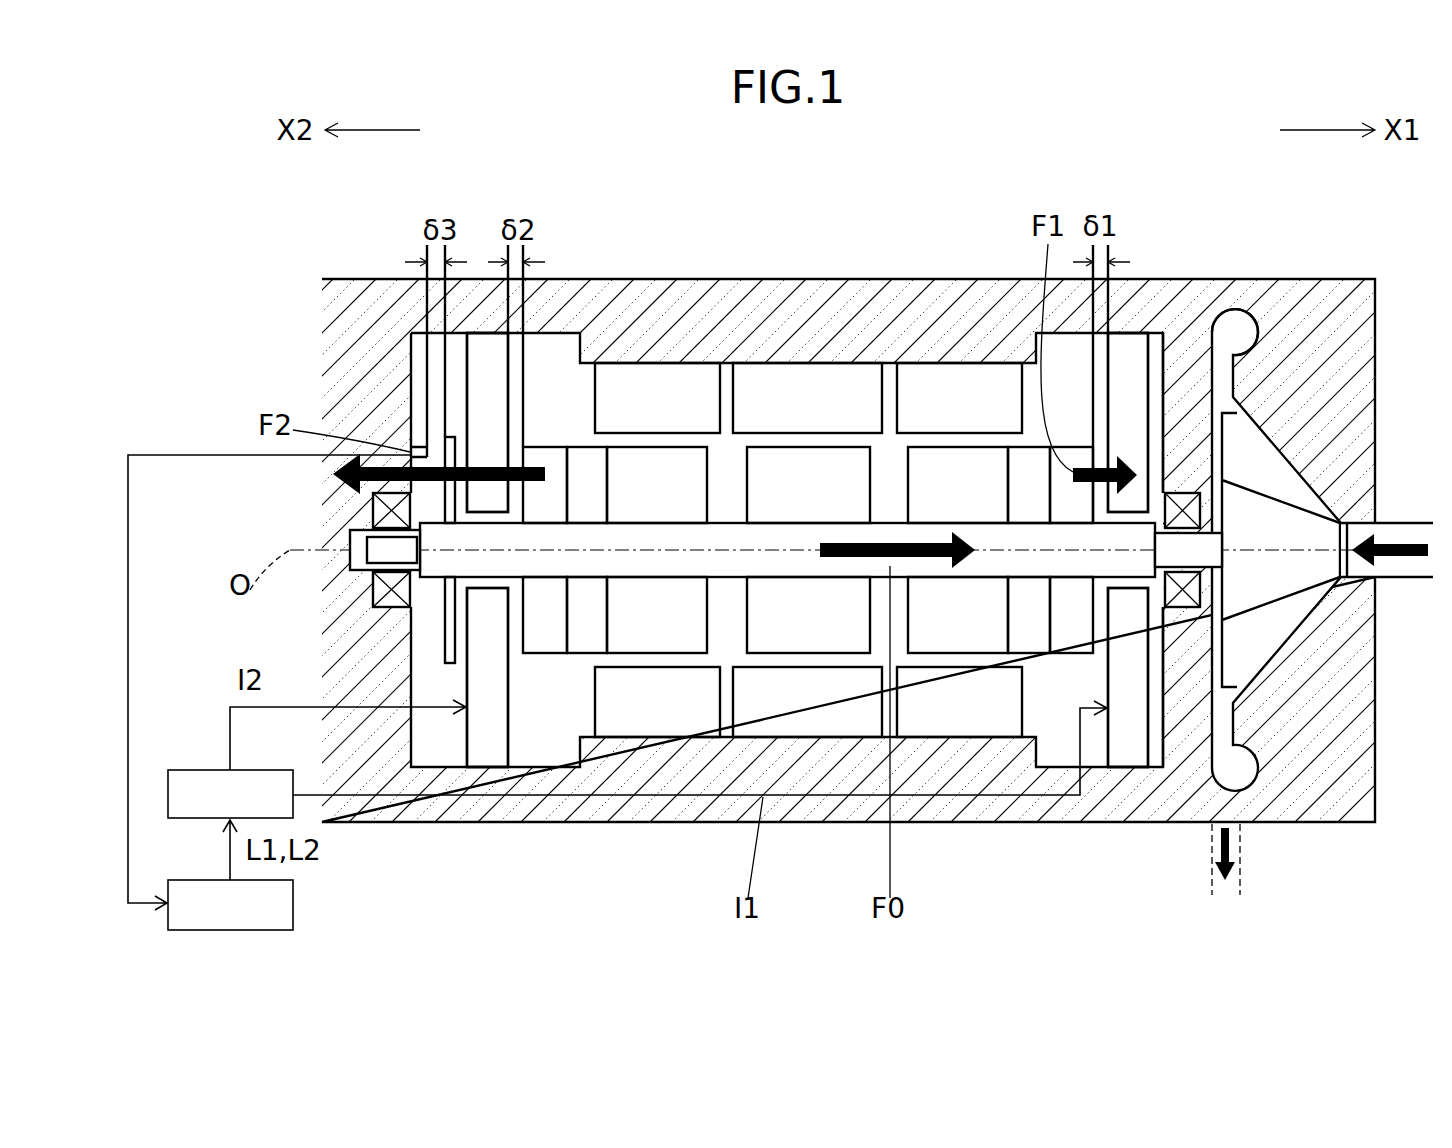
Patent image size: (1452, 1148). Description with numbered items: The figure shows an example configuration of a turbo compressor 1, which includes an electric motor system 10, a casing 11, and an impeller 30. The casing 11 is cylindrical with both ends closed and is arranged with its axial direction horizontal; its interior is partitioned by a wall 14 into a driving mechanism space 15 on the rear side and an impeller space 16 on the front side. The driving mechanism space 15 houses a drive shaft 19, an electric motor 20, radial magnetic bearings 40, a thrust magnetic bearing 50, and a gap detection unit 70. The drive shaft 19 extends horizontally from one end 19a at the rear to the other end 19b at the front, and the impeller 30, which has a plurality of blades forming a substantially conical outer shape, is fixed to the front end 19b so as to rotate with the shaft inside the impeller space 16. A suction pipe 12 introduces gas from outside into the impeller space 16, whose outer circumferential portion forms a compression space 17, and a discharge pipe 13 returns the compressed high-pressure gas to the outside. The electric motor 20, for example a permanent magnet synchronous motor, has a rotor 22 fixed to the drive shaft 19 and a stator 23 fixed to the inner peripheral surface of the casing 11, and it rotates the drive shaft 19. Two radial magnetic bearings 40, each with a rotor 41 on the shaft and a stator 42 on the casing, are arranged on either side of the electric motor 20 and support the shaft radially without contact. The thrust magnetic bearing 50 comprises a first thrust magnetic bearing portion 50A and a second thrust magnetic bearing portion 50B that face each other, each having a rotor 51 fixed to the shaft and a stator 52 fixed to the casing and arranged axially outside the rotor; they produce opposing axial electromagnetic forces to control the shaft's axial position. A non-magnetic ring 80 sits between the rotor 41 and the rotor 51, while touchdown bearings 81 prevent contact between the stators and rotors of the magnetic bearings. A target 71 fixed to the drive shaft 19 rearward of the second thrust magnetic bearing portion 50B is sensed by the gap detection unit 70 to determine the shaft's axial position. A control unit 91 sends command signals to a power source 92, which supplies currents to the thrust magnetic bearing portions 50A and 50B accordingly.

The turbo compressor 1 is at (1380, 270).
The electric motor system 10 is at (763, 203).
The casing 11 is at (877, 279).
The suction pipe 12 is at (1397, 567).
The discharge pipe 13 is at (1240, 857).
The wall 14 is at (1187, 713).
The driving mechanism space 15 is at (797, 667).
The impeller space 16 is at (1262, 440).
The compression space 17 is at (1236, 311).
The drive shaft 19 is at (828, 578).
The one end of the drive shaft 19a is at (353, 560).
The other end of the drive shaft 19b is at (1223, 547).
The electric motor 20 is at (805, 361).
The rotor 22 is at (788, 634).
The stator 23 is at (863, 713).
The impeller 30 is at (1263, 625).
The radial magnetic bearing 40 is at (670, 361).
The rotor 41 is at (672, 640).
The stator 42 is at (627, 706).
The thrust magnetic bearing 50 is at (828, 468).
The first thrust magnetic bearing portion 50A is at (1130, 333).
The second thrust magnetic bearing portion 50B is at (490, 333).
The rotor 51 is at (545, 640).
The stator 52 is at (496, 745).
The gap detection unit 70 is at (385, 468).
The target 71 is at (353, 542).
The non-magnetic ring 80 is at (586, 475).
The touchdown bearing 81 is at (373, 505).
The control unit 91 is at (295, 903).
The power source 92 is at (203, 770).